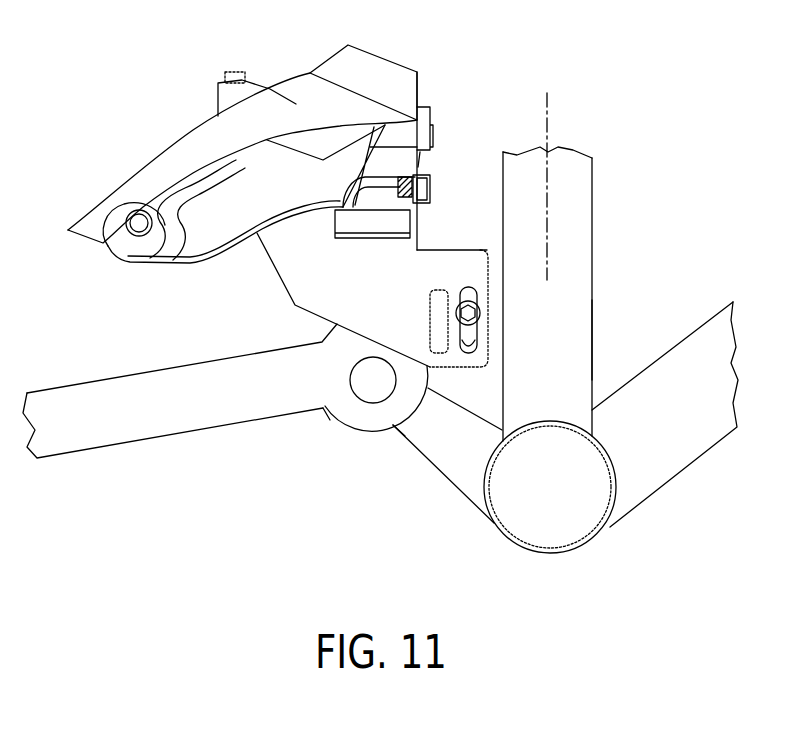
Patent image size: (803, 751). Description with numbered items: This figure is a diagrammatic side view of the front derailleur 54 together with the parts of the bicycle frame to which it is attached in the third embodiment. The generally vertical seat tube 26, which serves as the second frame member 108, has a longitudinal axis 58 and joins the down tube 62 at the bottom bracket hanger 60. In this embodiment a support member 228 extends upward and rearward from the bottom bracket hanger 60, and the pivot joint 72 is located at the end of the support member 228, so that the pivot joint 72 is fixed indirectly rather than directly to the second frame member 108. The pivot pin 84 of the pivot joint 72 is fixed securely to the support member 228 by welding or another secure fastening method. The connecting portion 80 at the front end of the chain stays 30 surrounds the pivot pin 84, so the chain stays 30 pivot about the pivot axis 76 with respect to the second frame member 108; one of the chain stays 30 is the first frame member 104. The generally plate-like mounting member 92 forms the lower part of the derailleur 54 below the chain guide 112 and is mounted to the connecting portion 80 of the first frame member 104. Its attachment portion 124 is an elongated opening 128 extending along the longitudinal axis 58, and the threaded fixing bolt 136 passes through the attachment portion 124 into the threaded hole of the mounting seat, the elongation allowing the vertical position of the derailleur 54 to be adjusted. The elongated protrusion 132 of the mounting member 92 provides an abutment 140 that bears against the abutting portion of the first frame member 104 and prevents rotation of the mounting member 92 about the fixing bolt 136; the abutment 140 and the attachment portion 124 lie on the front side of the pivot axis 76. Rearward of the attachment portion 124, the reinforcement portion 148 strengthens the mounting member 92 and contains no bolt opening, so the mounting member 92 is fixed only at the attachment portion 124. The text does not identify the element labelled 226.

The front derailleur 54 is at (185, 72).
The chain guide 112 is at (183, 152).
The reinforcement portion 148 is at (313, 283).
The elongated opening 128 is at (487, 252).
The mounting member 92 is at (453, 363).
The abutment 140 is at (430, 300).
The elongated protrusion 132 is at (420, 337).
The fixing bolt 136 is at (481, 313).
The attachment portion 124 is at (470, 345).
The chain stays 30 is at (107, 388).
The first frame member 104 is at (248, 395).
The pivot axis 76 is at (373, 380).
The connecting portion 80 is at (367, 422).
The pivot pin 84 is at (353, 393).
The pivot joint 72 is at (348, 465).
The support member 228 is at (460, 473).
The seat tube 26 is at (568, 170).
The longitudinal axis 58 is at (547, 243).
The second frame member 108 is at (567, 338).
The down tube upper edge 226 is at (687, 358).
The down tube 62 is at (628, 465).
The bottom bracket hanger 60 is at (547, 552).